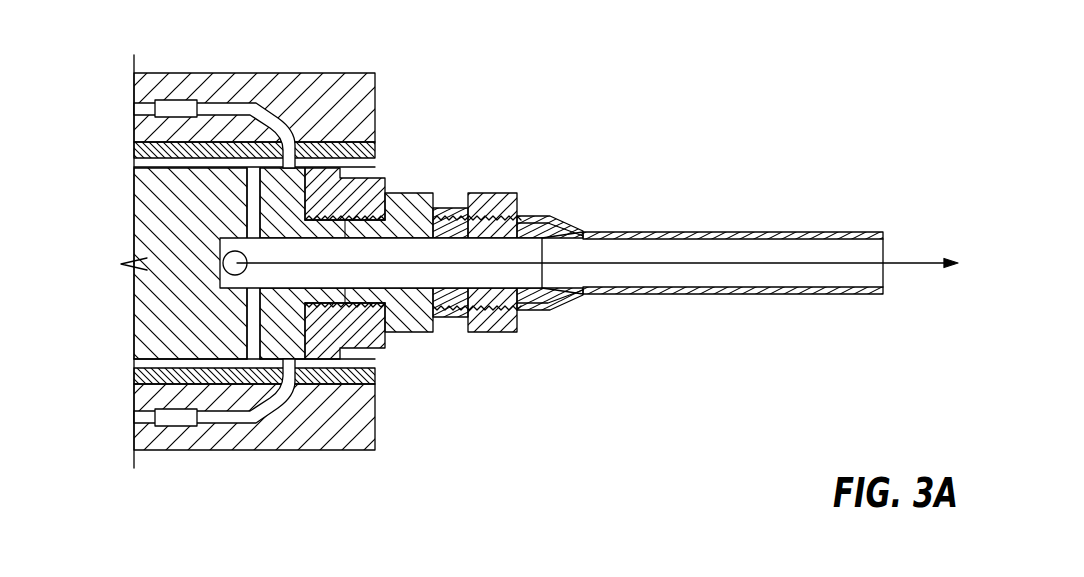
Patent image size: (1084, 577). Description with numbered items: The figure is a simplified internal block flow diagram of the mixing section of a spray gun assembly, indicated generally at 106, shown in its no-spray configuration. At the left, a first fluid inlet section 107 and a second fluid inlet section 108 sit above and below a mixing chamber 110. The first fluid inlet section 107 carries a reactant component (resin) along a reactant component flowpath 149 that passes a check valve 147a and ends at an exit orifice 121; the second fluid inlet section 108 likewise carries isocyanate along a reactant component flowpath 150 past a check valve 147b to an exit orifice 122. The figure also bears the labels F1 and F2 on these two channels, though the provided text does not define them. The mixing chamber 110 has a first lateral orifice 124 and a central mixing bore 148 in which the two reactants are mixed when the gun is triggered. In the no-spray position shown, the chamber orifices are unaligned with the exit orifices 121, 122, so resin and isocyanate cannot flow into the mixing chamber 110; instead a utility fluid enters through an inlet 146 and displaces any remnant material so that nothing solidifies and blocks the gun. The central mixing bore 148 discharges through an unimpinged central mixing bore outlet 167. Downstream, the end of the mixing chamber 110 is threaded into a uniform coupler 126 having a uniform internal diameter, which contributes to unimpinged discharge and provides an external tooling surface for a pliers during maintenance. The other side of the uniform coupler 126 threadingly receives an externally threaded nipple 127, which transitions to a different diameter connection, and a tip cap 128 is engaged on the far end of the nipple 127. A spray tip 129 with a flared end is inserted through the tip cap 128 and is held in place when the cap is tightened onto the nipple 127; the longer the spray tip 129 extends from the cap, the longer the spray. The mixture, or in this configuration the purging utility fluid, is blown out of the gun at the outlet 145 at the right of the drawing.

The fluid connection assembly 106 is at (363, 44).
The first fluid inlet section 107 is at (377, 421).
The second fluid inlet section 108 is at (377, 108).
The mixing chamber 110 is at (167, 231).
The exit orifice 121 is at (300, 387).
The exit orifice 122 is at (300, 137).
The first lateral orifice 124 is at (243, 347).
The uniform coupler 126 is at (388, 190).
The nipple 127 is at (410, 333).
The tip cap 128 is at (490, 333).
The spray tip 129 is at (741, 296).
The outlet 145 is at (884, 233).
The inlet 146 is at (232, 272).
The check valve 147a is at (175, 421).
The check valve 147b is at (175, 106).
The central mixing bore 148 is at (378, 350).
The reactant component flowpath 149 is at (150, 421).
The reactant component flowpath 150 is at (143, 102).
The central mixing bore outlet 167 is at (342, 246).
The fluid flow F1 is at (247, 423).
The fluid flow F2 is at (247, 103).